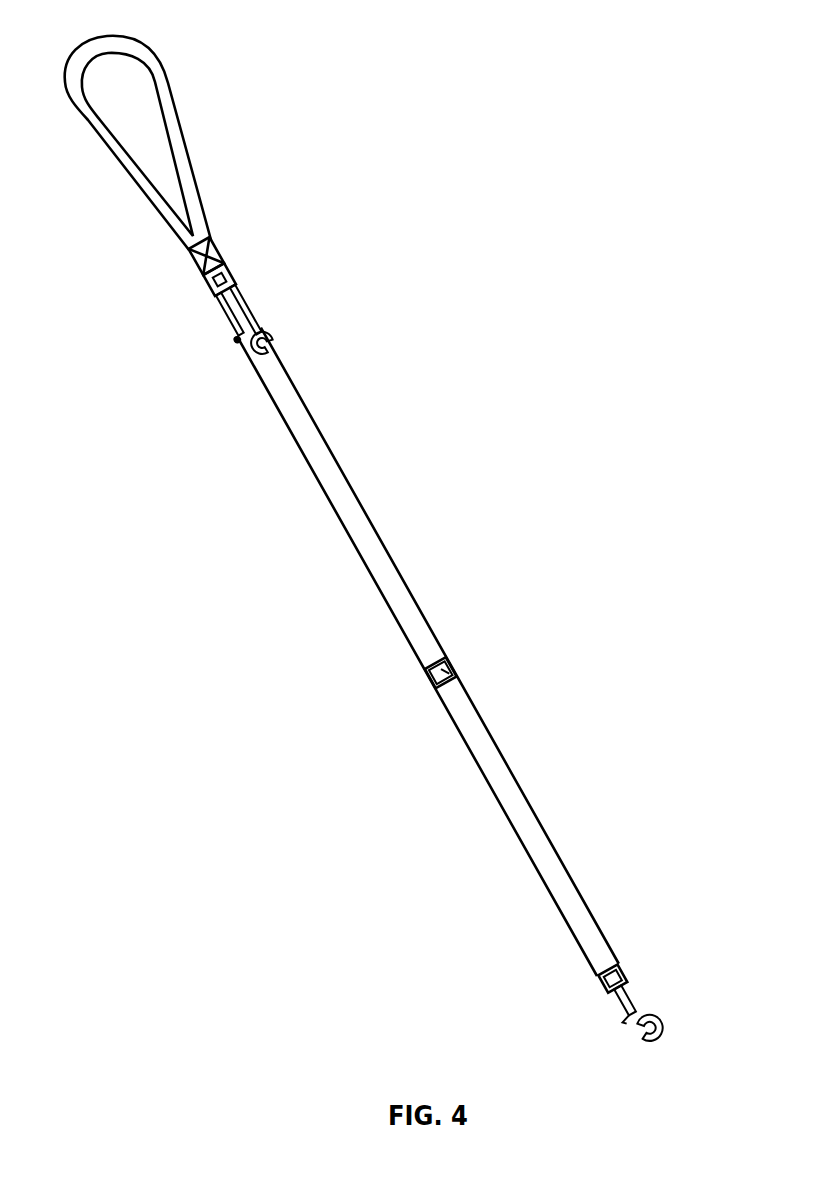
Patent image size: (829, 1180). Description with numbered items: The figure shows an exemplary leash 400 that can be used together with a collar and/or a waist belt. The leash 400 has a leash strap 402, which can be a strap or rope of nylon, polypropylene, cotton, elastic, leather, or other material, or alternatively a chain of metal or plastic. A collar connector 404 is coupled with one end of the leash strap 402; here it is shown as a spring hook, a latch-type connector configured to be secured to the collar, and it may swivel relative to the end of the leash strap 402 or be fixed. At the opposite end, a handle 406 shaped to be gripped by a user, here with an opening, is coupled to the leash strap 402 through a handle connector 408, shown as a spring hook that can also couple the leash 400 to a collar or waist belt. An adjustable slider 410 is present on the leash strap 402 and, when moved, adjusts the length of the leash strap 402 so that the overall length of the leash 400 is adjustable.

The leash 400 is at (420, 390).
The leash strap 402 is at (512, 798).
The collar connector 404 is at (630, 993).
The handle 406 is at (175, 127).
The handle connector 408 is at (227, 270).
The adjustable slider 410 is at (450, 658).